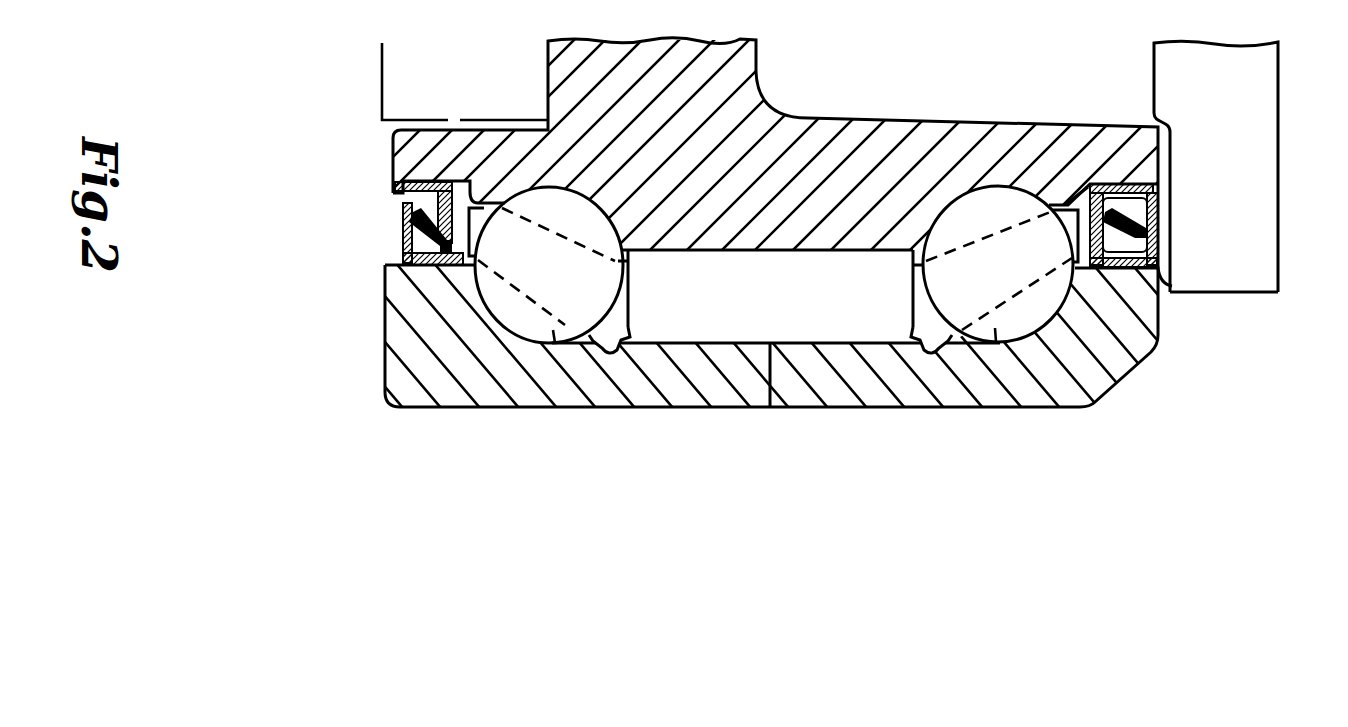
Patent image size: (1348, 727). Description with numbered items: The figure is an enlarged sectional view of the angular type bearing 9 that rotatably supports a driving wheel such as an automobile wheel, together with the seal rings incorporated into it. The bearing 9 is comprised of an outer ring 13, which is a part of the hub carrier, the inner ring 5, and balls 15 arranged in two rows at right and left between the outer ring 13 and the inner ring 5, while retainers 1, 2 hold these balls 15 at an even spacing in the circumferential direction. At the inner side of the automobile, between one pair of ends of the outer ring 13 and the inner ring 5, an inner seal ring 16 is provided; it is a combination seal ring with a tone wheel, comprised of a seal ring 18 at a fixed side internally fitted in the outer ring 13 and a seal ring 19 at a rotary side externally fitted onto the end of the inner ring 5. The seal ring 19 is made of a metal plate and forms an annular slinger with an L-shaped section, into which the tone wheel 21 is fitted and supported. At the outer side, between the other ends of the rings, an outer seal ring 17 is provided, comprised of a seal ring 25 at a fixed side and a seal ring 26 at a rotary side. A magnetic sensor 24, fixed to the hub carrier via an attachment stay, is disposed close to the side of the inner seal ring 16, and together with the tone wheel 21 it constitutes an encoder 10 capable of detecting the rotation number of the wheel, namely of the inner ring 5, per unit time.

The retainer 1 is at (642, 343).
The retainer 2 is at (900, 325).
The inner ring 5 is at (1073, 395).
The angular type bearing 9 is at (375, 355).
The encoder 10 is at (1212, 308).
The outer ring 13 is at (803, 143).
The balls 15 is at (553, 332).
The inner seal ring 16 is at (1085, 190).
The outer seal ring 17 is at (466, 195).
The seal ring at a fixed side 18 is at (1112, 175).
The seal ring at a rotary side 19 is at (1168, 282).
The tone wheel 21 is at (1156, 218).
The magnetic sensor 24 is at (1268, 92).
The seal ring at a fixed side 25 is at (447, 176).
The seal ring at a rotary side 26 is at (390, 242).